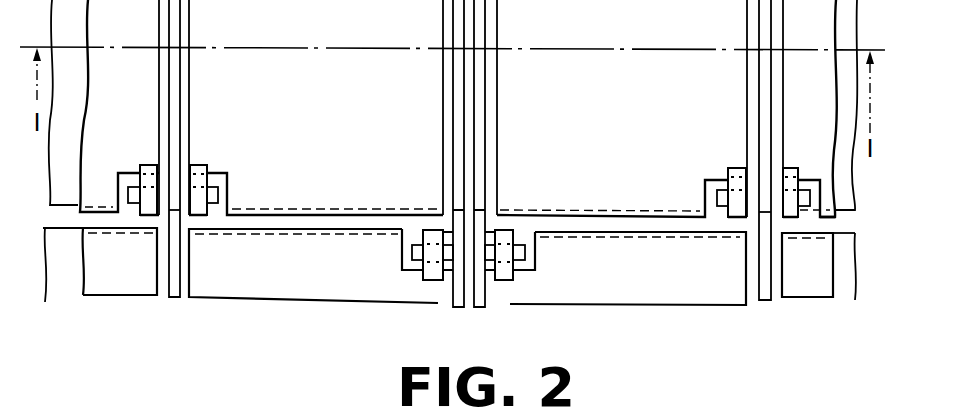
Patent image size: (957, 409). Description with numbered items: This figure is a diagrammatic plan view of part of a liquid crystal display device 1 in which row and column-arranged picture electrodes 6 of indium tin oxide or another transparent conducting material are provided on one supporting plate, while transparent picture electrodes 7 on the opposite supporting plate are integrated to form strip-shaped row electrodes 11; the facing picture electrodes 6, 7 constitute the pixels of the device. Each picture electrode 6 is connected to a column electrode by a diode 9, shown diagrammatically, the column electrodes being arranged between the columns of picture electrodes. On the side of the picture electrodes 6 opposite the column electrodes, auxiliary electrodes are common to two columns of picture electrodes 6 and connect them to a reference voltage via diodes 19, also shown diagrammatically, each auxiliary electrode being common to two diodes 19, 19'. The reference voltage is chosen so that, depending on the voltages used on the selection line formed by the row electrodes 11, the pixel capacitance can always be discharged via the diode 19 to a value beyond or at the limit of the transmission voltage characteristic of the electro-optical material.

The shutter assembly 1 is at (163, 317).
The picture electrodes 6 is at (307, 283).
The picture electrodes 7 is at (267, 230).
The diode 9 is at (433, 250).
The row electrodes 11 is at (843, 273).
The diode 19 is at (440, 251).
The diode 19' is at (201, 251).